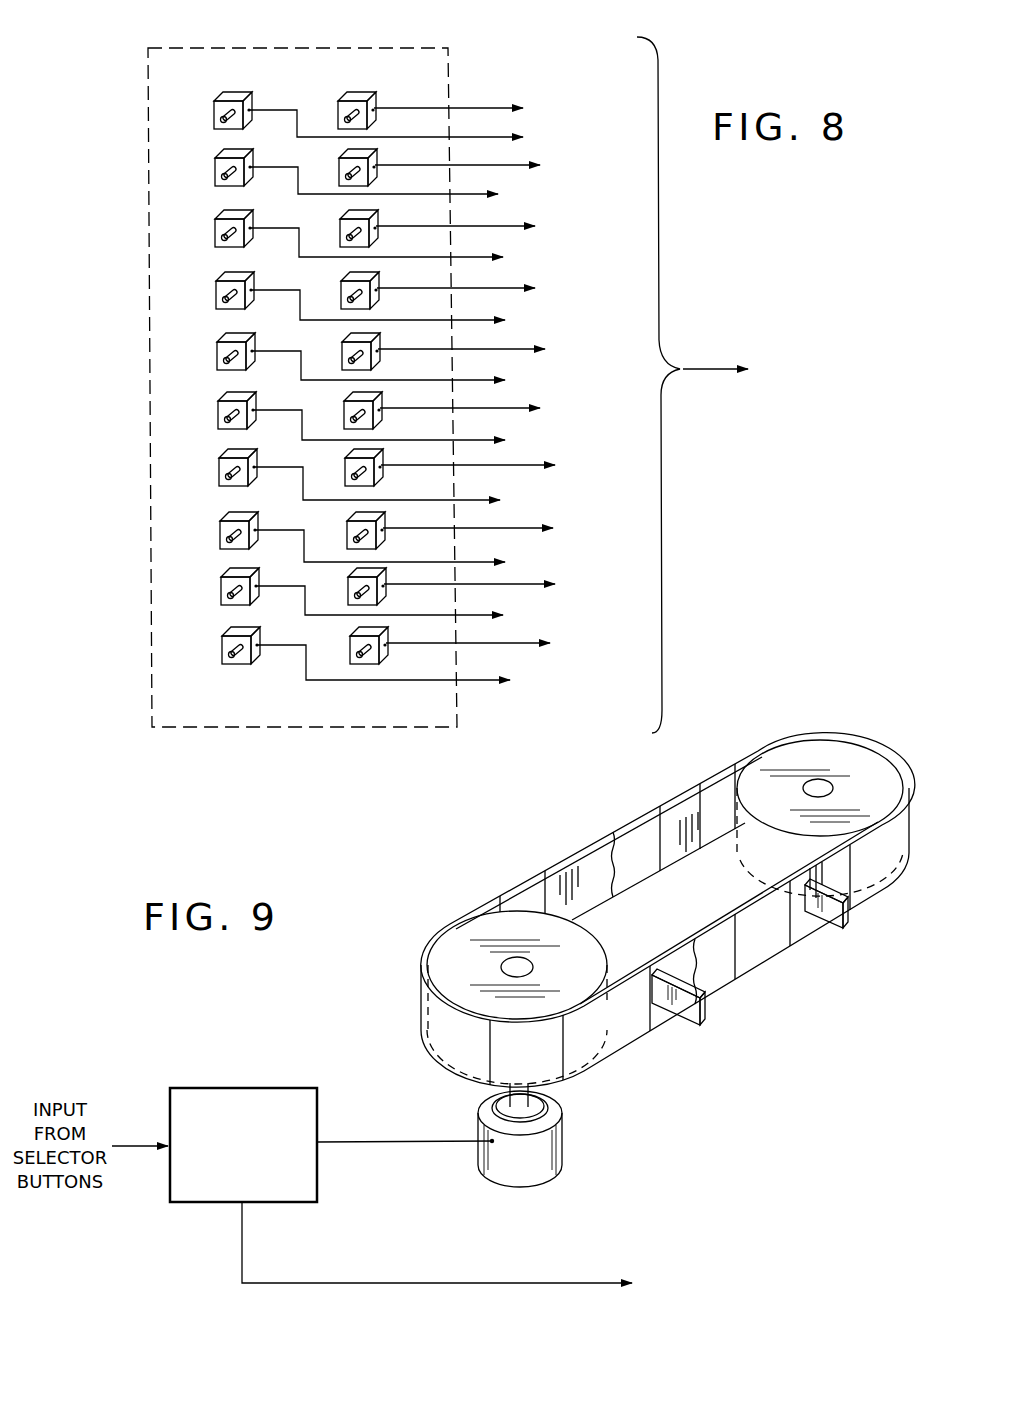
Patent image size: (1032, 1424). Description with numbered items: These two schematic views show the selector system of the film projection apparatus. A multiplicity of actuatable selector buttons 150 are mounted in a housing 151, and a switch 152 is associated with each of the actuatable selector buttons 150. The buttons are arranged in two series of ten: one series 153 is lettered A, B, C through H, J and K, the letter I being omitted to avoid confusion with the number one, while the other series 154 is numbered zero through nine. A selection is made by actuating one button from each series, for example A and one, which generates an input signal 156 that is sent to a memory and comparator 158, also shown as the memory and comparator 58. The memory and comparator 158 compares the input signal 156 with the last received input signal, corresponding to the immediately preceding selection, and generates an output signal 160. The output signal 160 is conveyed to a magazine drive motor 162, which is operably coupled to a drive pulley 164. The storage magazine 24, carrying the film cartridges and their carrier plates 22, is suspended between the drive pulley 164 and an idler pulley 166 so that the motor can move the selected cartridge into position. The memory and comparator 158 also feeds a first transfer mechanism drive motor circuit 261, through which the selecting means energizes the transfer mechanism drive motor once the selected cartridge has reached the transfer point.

In FIG. 8, the actuatable selector buttons 150 is at (350, 44).
In FIG. 8, the housing 151 is at (148, 261).
In FIG. 8, the switch 152 is at (363, 97).
In FIG. 8, the series of actuatable selector buttons 153 is at (192, 683).
In FIG. 8, the series of actuatable selector buttons 154 is at (363, 660).
In FIG. 8, the input signal 156 is at (700, 364).
In FIG. 8, the memory and comparator 58 is at (794, 433).
In FIG. 9, the memory and comparator 158 is at (253, 1087).
In FIG. 9, the output signal 160 is at (385, 1194).
In FIG. 9, the magazine drive motor 162 is at (538, 1164).
In FIG. 9, the drive pulley 164 is at (456, 946).
In FIG. 9, the idler pulley 166 is at (762, 780).
In FIG. 9, the carrier plate 22 is at (703, 1012).
In FIG. 9, the storage magazine 24 is at (627, 1022).
In FIG. 9, the first transfer mechanism drive motor circuit 261 is at (699, 1346).